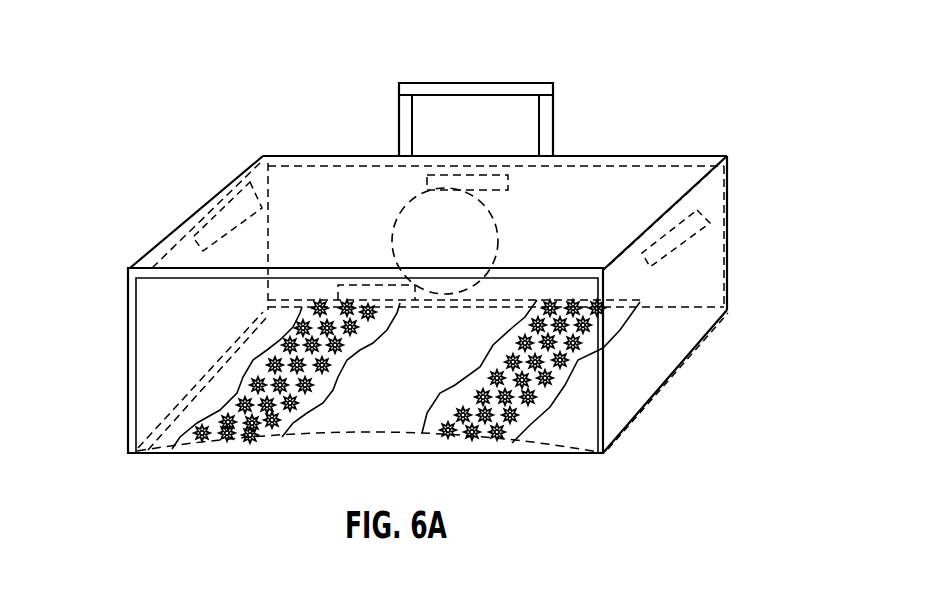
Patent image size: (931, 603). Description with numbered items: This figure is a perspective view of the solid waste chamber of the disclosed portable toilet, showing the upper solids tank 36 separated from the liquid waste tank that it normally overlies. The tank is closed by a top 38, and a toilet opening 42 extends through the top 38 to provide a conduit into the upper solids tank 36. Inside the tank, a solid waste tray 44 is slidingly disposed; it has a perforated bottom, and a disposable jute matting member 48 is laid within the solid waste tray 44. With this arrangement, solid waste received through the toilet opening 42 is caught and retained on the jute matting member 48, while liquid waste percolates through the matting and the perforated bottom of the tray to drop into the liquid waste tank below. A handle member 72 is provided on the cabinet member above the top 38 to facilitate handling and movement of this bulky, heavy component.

The upper solids tank 36 is at (728, 238).
The top 38 is at (637, 177).
The toilet opening 42 is at (502, 240).
The solid waste tray 44 is at (673, 338).
The disposable jute matting member 48 is at (575, 365).
The handle member 72 is at (503, 82).